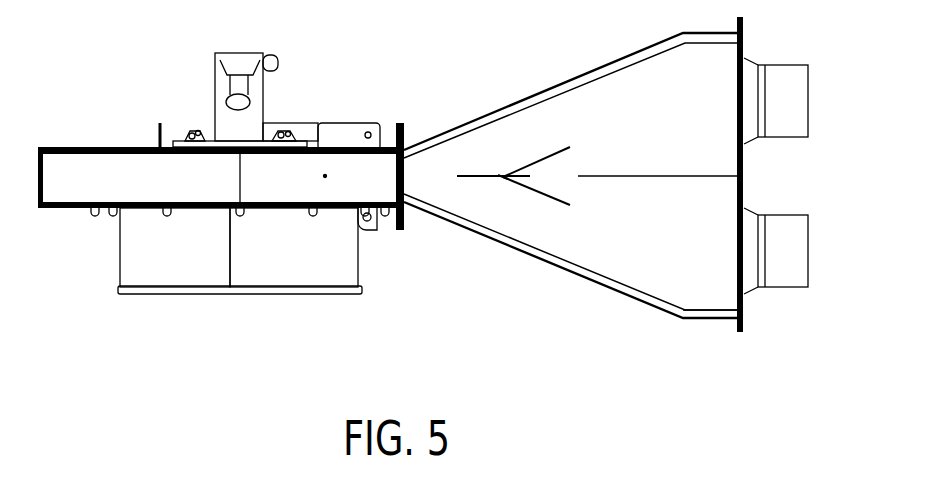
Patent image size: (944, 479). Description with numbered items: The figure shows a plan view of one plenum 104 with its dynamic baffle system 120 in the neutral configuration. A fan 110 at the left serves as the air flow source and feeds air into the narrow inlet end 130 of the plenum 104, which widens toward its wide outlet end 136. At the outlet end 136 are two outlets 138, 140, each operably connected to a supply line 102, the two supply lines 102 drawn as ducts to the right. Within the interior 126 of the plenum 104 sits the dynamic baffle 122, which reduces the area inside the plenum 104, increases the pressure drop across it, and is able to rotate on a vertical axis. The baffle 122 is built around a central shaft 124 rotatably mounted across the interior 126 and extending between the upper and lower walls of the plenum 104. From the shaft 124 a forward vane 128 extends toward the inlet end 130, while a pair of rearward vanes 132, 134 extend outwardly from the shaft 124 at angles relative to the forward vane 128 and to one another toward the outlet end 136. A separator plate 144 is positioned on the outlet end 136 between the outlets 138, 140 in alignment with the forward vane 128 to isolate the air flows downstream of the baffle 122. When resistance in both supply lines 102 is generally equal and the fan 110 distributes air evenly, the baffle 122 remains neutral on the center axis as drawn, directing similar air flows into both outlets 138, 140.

The fan 110 is at (127, 135).
The narrow inlet end 130 is at (407, 147).
The plenum 104 is at (652, 312).
The dynamic baffle system 120 is at (603, 303).
The interior 126 is at (692, 297).
The wide outlet end 136 is at (726, 322).
The forward vane 128 is at (480, 176).
The rearward vane 132 is at (538, 162).
The rearward vane 134 is at (540, 190).
The central shaft 124 is at (499, 181).
The dynamic baffle 122 is at (512, 202).
The separator plate 144 is at (712, 176).
The outlet 138 is at (747, 63).
The outlet 140 is at (748, 290).
The supply line 102 is at (800, 107).